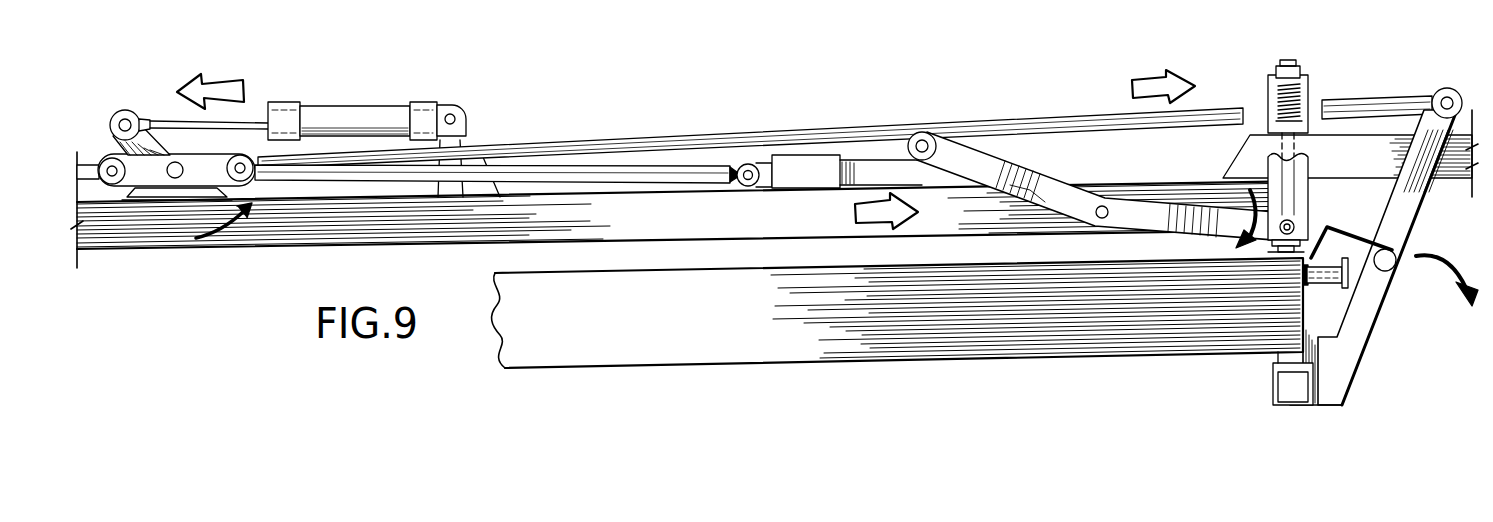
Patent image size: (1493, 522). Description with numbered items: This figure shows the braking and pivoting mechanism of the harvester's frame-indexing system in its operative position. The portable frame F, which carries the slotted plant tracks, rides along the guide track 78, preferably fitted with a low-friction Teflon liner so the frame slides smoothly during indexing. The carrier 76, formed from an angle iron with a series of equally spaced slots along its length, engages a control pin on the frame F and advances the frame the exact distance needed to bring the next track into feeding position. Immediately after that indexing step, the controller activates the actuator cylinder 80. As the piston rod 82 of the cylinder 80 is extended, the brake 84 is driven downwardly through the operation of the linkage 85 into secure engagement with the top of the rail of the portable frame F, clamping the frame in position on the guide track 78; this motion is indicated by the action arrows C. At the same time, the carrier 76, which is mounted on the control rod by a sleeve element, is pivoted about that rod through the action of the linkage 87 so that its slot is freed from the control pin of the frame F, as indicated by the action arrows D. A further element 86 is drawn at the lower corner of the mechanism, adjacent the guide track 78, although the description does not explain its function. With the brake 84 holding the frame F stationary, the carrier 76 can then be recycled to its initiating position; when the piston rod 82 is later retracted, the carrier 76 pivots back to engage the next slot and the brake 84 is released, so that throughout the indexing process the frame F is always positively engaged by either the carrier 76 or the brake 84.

The carrier 76 is at (1343, 237).
The guide track 78 is at (1332, 280).
The actuator cylinder 80 is at (368, 110).
The piston rod 82 is at (170, 121).
The brake 84 is at (1279, 248).
The linkage 85 is at (1040, 178).
The foot bracket 86 is at (1278, 365).
The linkage 87 is at (1003, 118).
The portable frame F is at (788, 347).
The action arrows C is at (222, 90).
The action arrows D is at (1148, 83).